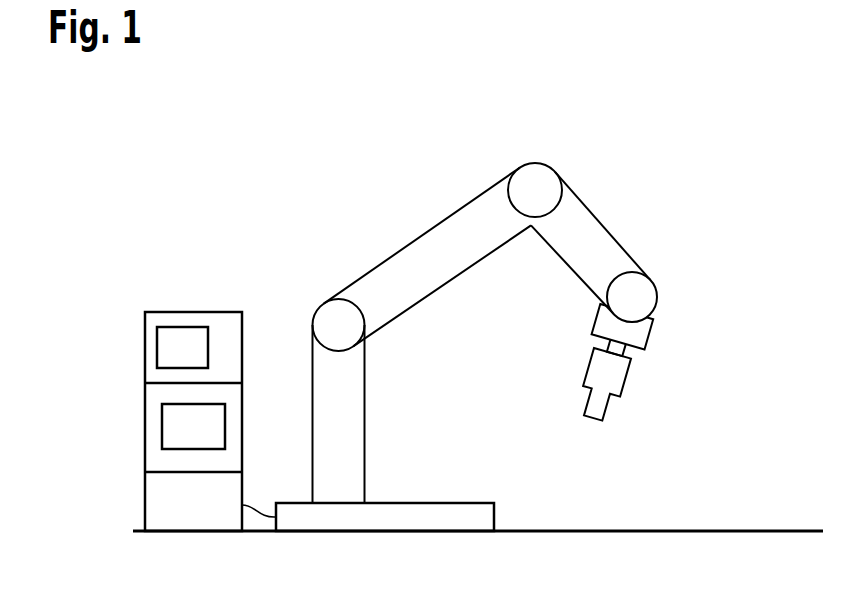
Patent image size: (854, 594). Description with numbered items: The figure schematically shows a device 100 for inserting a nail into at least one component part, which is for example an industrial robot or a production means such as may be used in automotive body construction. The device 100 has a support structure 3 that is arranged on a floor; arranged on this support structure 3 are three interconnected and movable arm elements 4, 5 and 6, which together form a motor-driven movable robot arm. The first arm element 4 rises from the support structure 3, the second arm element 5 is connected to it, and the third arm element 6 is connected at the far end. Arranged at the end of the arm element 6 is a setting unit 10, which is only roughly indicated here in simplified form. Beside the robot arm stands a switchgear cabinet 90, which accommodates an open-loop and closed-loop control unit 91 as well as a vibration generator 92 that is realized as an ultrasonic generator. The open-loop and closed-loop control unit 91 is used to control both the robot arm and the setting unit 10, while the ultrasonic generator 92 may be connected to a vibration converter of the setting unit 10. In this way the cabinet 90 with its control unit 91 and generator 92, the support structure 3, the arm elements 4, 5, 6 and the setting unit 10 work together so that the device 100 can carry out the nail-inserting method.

The device 100 is at (266, 184).
The support structure 3 is at (322, 447).
The arm element 4 is at (440, 247).
The arm element 5 is at (595, 250).
The arm element 6 is at (638, 332).
The setting unit 10 is at (618, 375).
The switchgear cabinet 90 is at (227, 322).
The open-loop and closed-loop control unit 91 is at (175, 345).
The vibration generator 92 is at (175, 423).